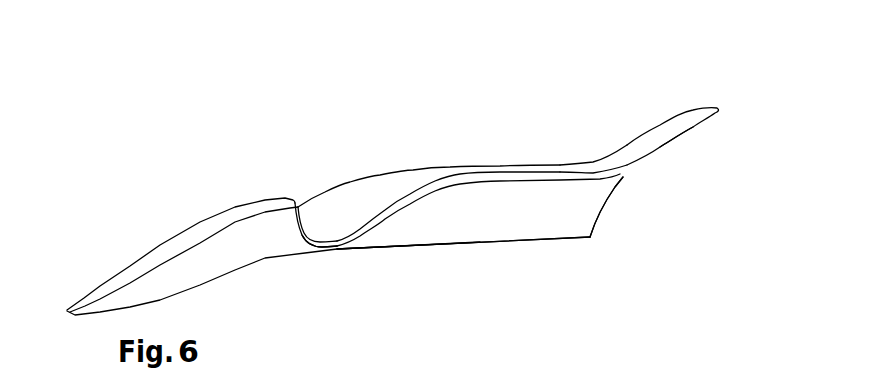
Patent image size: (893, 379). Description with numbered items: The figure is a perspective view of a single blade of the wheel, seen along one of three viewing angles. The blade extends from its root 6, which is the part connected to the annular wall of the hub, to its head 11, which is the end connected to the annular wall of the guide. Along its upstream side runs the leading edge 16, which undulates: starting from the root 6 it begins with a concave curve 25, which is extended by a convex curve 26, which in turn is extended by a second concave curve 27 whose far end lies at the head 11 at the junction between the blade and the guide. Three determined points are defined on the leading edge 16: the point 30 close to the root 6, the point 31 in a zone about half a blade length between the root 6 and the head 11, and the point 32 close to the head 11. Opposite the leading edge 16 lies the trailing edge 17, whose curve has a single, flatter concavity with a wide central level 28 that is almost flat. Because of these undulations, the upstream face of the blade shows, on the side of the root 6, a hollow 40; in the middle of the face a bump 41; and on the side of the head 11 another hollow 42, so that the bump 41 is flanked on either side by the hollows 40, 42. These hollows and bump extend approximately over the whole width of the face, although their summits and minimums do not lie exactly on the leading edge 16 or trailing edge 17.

The root 6 is at (167, 241).
The head 11 is at (673, 112).
The leading edge 16 is at (535, 158).
The trailing edge 17 is at (492, 262).
The concave curve 25 is at (337, 250).
The convex curve 26 is at (457, 174).
The concave curve 27 is at (630, 174).
The central level 28 is at (413, 249).
The determined point 30 is at (355, 245).
The determined point 31 is at (426, 190).
The determined point 32 is at (667, 157).
The hollow 40 is at (298, 186).
The bump 41 is at (375, 164).
The hollow 42 is at (588, 148).